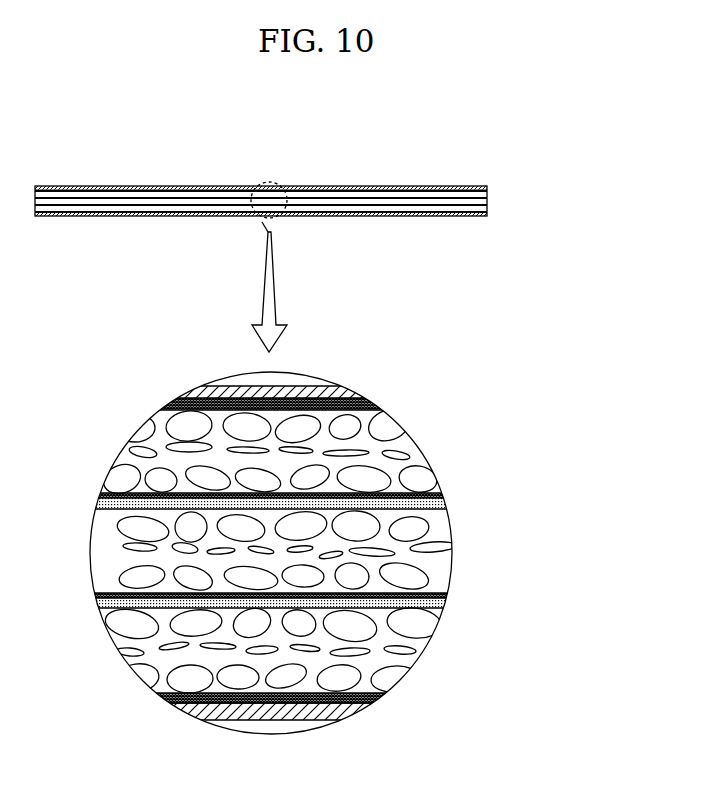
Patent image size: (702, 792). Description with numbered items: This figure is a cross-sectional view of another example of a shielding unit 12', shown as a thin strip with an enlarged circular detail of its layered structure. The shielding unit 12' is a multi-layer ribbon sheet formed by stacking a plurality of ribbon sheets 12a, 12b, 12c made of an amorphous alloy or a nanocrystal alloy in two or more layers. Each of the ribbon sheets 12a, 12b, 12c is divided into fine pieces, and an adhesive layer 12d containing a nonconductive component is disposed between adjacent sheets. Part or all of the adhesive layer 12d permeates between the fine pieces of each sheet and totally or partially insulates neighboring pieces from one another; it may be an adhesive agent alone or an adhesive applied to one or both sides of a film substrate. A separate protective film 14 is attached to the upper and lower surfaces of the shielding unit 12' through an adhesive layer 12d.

The shielding unit 12' is at (308, 423).
The ribbon sheet 12a is at (408, 448).
The ribbon sheet 12b is at (444, 552).
The ribbon sheet 12c is at (418, 648).
The adhesive layer 12d is at (385, 404).
The protective film 14 is at (388, 392).